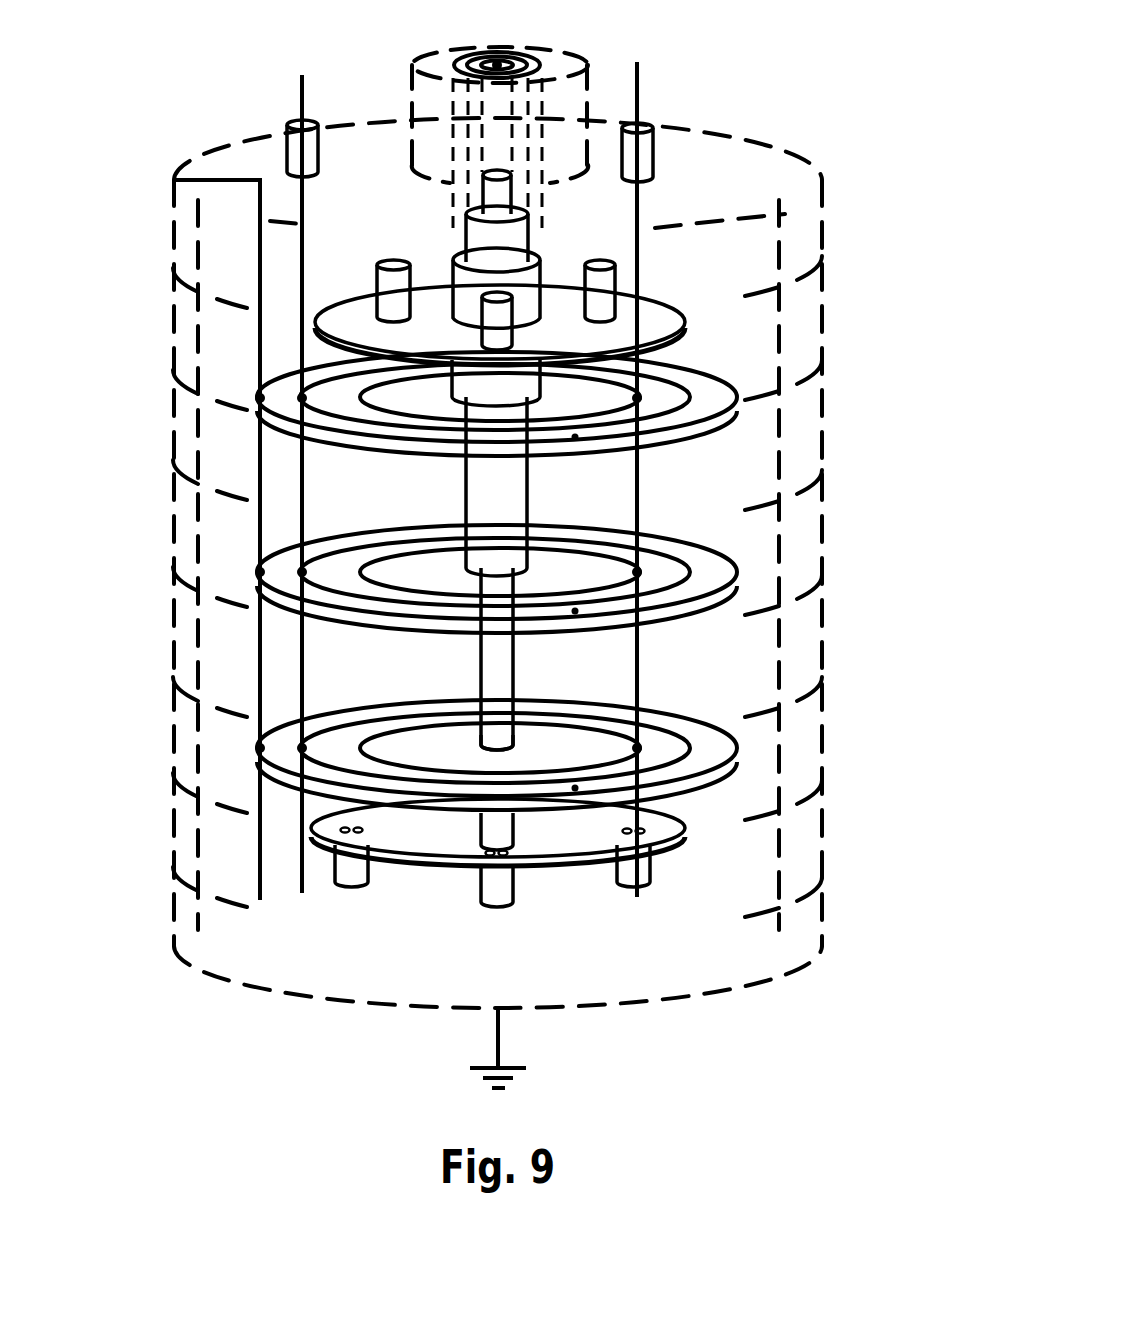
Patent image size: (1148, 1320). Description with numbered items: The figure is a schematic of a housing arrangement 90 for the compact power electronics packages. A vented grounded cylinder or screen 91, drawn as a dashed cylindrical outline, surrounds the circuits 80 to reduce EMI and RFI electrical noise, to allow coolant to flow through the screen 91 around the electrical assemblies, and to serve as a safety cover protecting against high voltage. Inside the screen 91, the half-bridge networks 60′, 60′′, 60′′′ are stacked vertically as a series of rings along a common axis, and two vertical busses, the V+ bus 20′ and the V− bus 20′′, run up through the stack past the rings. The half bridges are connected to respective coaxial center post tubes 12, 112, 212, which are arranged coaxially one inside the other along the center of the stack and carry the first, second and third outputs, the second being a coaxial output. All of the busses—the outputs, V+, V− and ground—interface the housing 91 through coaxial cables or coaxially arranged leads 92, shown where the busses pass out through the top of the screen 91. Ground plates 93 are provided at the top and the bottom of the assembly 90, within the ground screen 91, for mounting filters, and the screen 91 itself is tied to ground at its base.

The housing arrangement 90 is at (212, 124).
The vented grounded cylinder or screen 91 is at (170, 293).
The V+ bus 20′ is at (312, 76).
The V− bus 20′′ is at (643, 80).
The coaxial cables or coaxially arranged leads 92 is at (654, 147).
The ground plates 93 is at (650, 322).
The coaxial center post tube 212 is at (453, 270).
The coaxial center post tube 112 is at (425, 492).
The coaxial center post tube 12 is at (490, 193).
The circuits 80 is at (488, 726).
The half-bridge network 60′′′ is at (730, 429).
The half-bridge network 60′′ is at (723, 571).
The half-bridge network 60′ is at (750, 753).